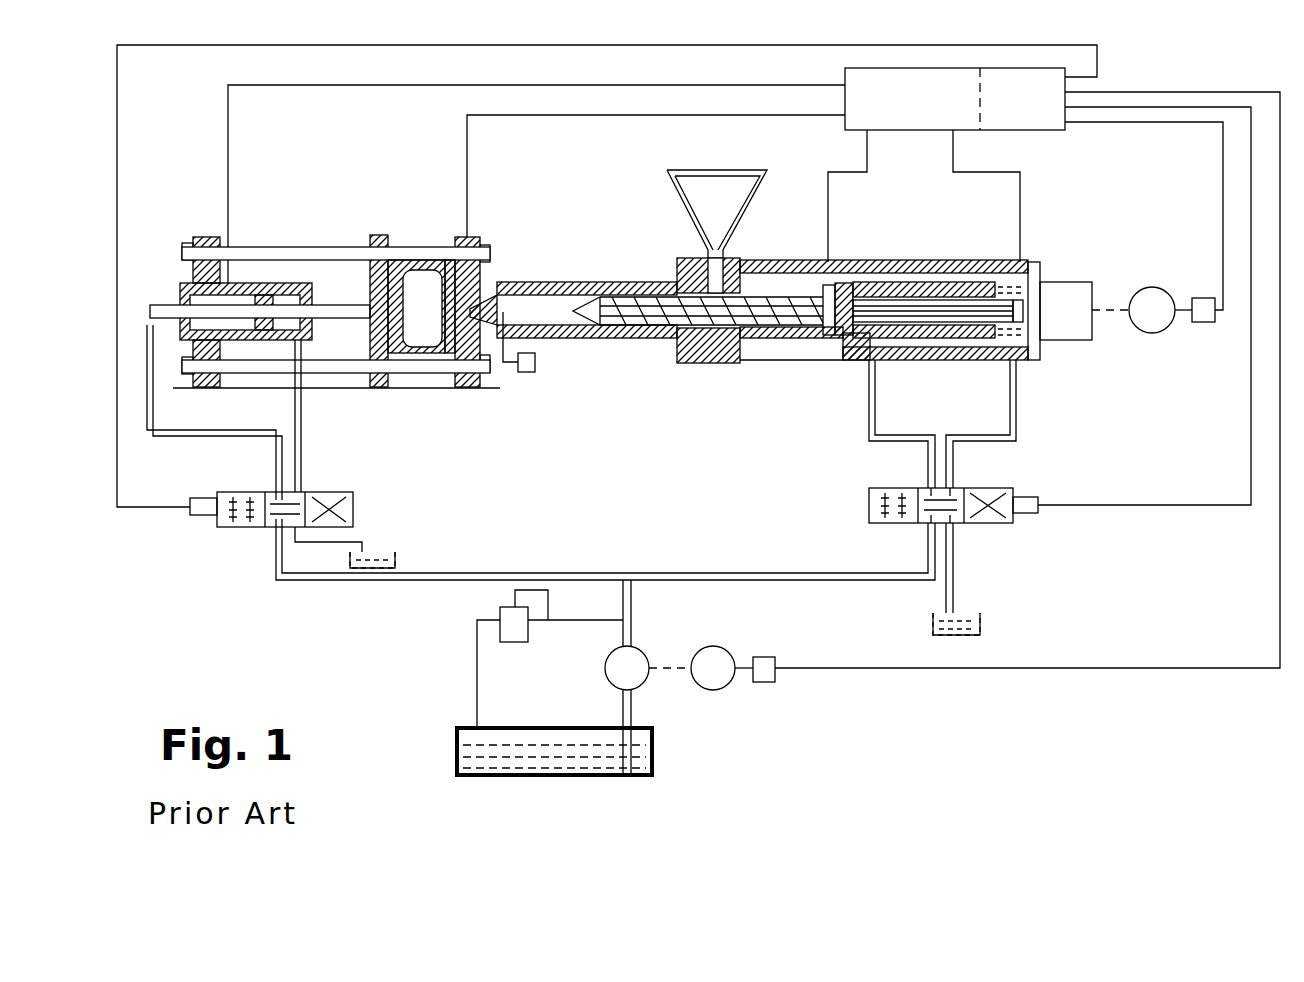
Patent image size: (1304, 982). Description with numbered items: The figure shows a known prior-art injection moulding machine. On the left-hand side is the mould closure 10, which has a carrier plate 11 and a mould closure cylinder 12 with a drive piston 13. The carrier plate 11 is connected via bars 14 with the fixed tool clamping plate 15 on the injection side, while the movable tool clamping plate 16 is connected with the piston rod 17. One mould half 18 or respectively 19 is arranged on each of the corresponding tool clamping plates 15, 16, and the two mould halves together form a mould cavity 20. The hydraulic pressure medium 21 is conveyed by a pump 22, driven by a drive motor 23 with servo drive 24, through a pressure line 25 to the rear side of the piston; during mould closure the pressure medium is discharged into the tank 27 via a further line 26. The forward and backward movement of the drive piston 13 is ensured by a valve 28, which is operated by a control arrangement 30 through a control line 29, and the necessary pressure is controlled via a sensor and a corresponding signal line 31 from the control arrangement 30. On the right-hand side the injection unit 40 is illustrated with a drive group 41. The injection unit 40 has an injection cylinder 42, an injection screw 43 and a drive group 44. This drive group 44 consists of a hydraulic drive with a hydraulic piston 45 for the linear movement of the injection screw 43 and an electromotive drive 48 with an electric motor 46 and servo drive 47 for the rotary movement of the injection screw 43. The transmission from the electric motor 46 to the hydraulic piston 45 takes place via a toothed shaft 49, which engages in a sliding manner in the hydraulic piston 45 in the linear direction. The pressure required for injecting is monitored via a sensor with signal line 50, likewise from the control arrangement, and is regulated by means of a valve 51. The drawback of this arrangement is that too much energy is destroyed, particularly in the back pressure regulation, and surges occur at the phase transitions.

The mould closure 10 is at (415, 398).
The carrier plate 11 is at (205, 237).
The mould closure cylinder 12 is at (237, 283).
The drive piston 13 is at (263, 295).
The bars 14 is at (308, 247).
The fixed tool clamping plate 15 is at (462, 237).
The movable tool clamping plate 16 is at (378, 235).
The piston rod 17 is at (333, 305).
The mould half 18 is at (395, 370).
The mould half 19 is at (437, 370).
The mould cavity 20 is at (437, 323).
The hydraulic pressure medium 21 is at (510, 728).
The pump 22 is at (645, 658).
The drive motor 23 is at (720, 648).
The servo drive 24 is at (772, 657).
The pressure line 25 is at (318, 582).
The further line 26 is at (276, 452).
The tank 27 is at (395, 555).
The valve 28 is at (305, 492).
The control line 29 is at (143, 507).
The control arrangement 30 is at (1065, 130).
The signal line 31 is at (375, 85).
The injection unit 40 is at (667, 370).
The drive group 41 is at (845, 365).
The injection cylinder 42 is at (535, 282).
The injection screw 43 is at (618, 300).
The drive group 44 is at (1040, 395).
The hydraulic piston 45 is at (980, 282).
The electric motor 46 is at (1150, 333).
The servo drive 47 is at (1203, 322).
The electromotive drive 48 is at (1070, 285).
The toothed shaft 49 is at (1023, 312).
The signal line 50 is at (1022, 232).
The valve 51 is at (895, 490).